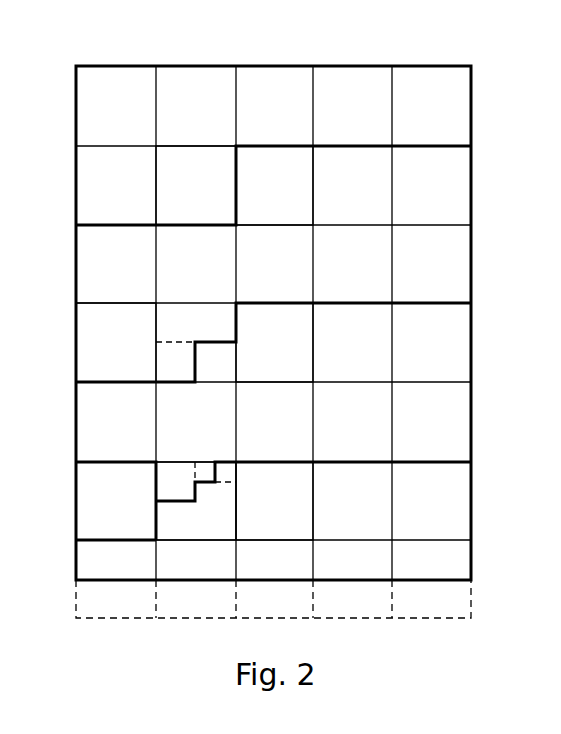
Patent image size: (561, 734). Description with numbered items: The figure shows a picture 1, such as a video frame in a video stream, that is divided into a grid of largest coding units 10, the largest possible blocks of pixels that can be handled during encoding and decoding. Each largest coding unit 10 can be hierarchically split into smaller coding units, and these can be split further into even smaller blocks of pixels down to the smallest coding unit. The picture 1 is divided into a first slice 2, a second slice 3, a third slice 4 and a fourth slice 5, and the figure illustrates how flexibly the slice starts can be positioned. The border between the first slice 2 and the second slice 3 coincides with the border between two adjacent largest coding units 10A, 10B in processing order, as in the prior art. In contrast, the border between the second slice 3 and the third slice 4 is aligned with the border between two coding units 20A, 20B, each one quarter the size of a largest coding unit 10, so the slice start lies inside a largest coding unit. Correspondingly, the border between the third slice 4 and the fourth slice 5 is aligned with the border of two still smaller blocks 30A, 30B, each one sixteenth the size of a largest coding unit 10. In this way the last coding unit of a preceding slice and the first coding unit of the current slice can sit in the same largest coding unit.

The picture 1 is at (271, 66).
The first slice 2 is at (75, 147).
The second slice 3 is at (73, 303).
The third slice 4 is at (73, 462).
The fourth slice 5 is at (73, 560).
The largest coding unit 10 is at (88, 107).
The largest coding unit 10A is at (215, 198).
The largest coding unit 10B is at (294, 198).
The coding unit 20A is at (175, 364).
The coding unit 20B is at (215, 366).
The smaller block 30A is at (200, 474).
The smaller block 30B is at (225, 474).